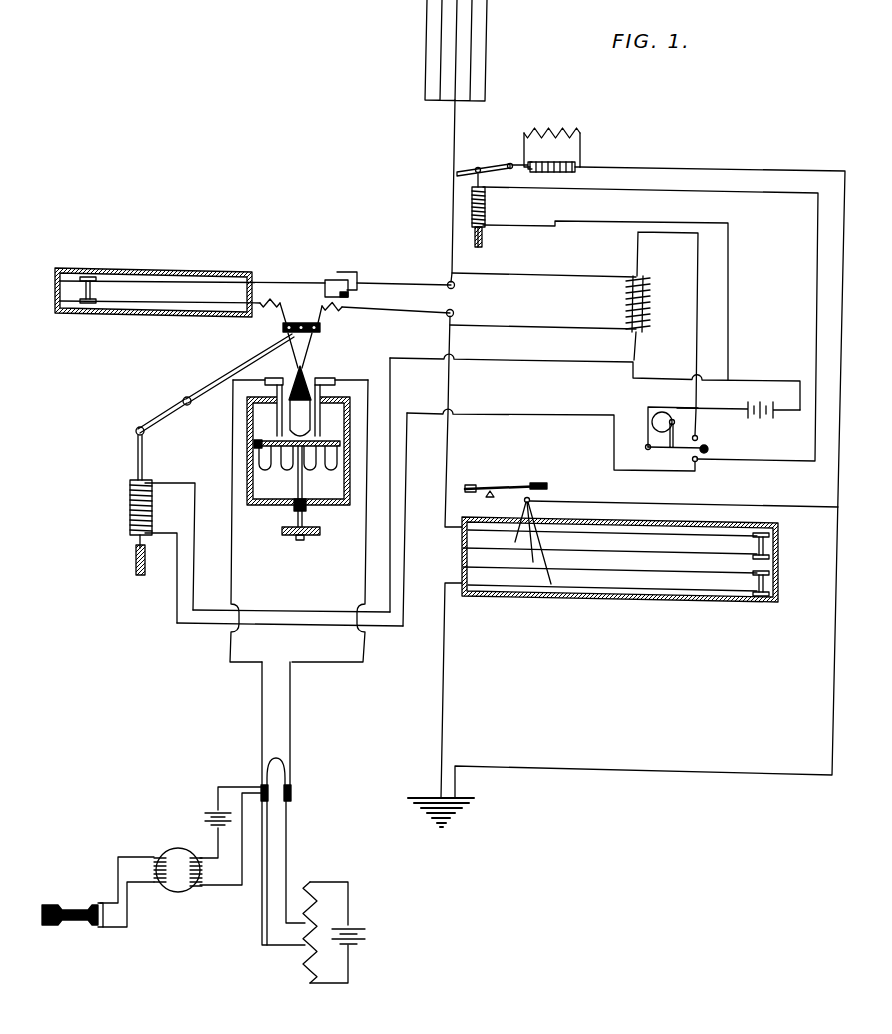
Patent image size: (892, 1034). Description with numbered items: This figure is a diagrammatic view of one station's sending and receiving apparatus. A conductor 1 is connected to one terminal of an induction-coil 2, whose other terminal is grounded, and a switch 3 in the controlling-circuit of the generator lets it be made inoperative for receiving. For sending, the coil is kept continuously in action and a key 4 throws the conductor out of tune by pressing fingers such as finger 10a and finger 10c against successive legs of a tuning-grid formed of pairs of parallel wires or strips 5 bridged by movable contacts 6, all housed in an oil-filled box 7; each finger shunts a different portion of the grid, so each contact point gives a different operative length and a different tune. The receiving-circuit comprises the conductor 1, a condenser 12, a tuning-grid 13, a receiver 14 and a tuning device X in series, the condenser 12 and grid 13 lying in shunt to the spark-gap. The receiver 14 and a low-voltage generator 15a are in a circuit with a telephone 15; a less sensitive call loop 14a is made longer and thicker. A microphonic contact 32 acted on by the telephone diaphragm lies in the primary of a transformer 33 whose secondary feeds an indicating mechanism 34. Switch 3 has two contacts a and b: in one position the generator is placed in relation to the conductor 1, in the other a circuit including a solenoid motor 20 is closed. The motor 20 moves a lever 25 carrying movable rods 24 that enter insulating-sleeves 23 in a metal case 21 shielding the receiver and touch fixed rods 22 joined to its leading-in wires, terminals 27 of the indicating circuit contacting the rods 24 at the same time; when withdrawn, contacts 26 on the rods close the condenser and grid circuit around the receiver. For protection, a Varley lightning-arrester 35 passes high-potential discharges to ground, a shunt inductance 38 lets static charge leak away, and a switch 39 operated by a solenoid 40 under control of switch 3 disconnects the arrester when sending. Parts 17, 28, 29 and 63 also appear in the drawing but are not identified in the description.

The conductor 1 is at (450, 137).
The induction-coil 2 is at (647, 306).
The switch 3 is at (670, 450).
The key 4 is at (498, 488).
The parallel wires or strips 5 is at (178, 284).
The movable contacts 6 is at (788, 582).
The box 7 is at (528, 598).
The finger 10a is at (549, 580).
The finger 10c is at (520, 528).
The condenser 12 is at (388, 271).
The tuning-grid 13 is at (153, 278).
The receiver 14 is at (304, 470).
The loop 14a is at (260, 456).
The telephone 15 is at (285, 764).
The low-voltage generator 15a is at (334, 932).
The cup 17 is at (279, 470).
The motor 20 is at (130, 522).
The metal case 21 is at (349, 472).
The rods 22 is at (289, 434).
The insulating-sleeves 23 is at (282, 412).
The movable rods 24 is at (292, 351).
The lever 25 is at (242, 370).
The contacts 26 is at (308, 338).
The terminals 27 is at (265, 383).
The plate 28 is at (254, 443).
The plate 29 is at (295, 526).
The microphonic contact 32 is at (261, 801).
The transformer 33 is at (178, 858).
The indicating mechanism 34 is at (70, 908).
The Varley lightning-arrester 35 is at (555, 153).
The inductance 38 is at (552, 133).
The switch 39 is at (488, 170).
The solenoid 40 is at (485, 210).
The relay 63 is at (666, 413).
The contact a is at (704, 430).
The contact b is at (700, 466).
The tuning device X is at (599, 609).